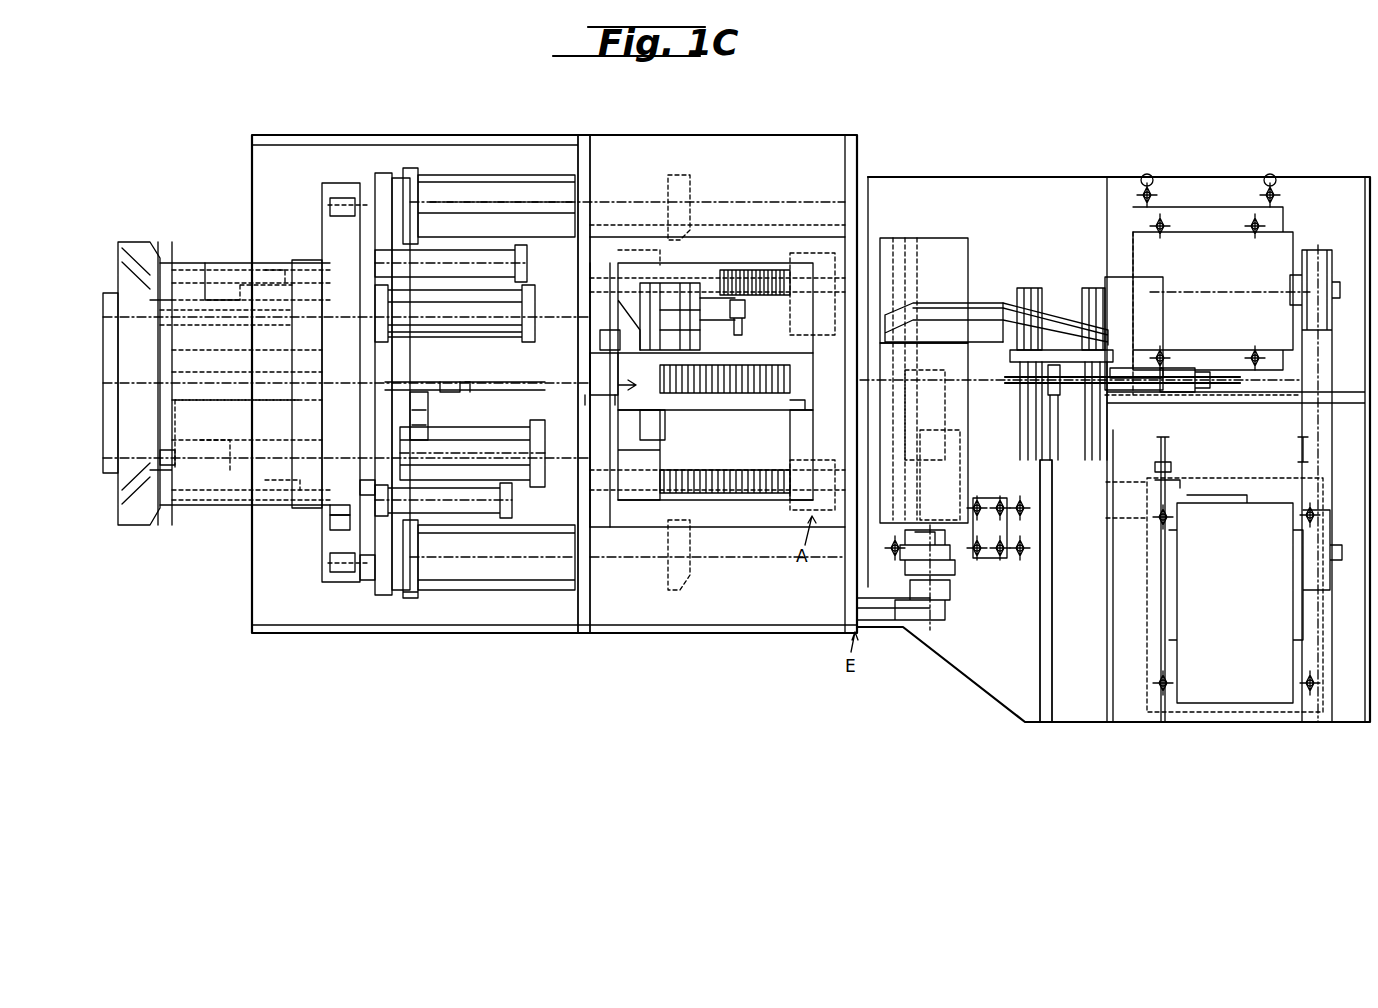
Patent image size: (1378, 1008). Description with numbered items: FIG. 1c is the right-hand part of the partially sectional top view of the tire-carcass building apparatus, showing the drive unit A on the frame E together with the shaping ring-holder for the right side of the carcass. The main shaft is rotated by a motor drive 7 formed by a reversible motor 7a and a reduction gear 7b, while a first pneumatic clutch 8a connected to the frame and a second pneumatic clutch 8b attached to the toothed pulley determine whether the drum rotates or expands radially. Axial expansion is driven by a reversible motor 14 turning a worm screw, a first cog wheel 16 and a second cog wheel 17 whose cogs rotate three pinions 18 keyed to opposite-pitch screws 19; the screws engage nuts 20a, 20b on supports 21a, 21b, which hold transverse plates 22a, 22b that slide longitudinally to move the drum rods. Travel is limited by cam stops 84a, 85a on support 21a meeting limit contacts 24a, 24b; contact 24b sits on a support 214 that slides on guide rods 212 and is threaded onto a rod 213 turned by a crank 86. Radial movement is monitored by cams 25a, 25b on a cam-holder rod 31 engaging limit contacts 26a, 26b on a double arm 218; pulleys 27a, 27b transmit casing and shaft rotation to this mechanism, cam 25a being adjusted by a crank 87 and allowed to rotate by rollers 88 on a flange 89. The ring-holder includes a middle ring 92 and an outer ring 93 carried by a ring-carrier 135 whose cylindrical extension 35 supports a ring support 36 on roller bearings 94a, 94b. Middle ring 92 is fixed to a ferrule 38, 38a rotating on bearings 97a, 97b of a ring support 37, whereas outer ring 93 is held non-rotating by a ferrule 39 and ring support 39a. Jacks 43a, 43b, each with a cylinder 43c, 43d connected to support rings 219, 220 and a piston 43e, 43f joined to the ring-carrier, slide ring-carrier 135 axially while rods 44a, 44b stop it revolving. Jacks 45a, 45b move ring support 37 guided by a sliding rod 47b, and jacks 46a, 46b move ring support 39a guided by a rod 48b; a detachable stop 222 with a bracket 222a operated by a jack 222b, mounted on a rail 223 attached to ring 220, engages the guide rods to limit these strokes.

The drive shaft 7 is at (175, 405).
The reversible motor 7a is at (1207, 346).
The reduction gear 7b is at (1244, 595).
The first pneumatically controlled clutch 8a is at (997, 468).
The second pneumatically operated clutch 8b is at (1068, 462).
The reversible motor 14 is at (960, 550).
The first cog wheel 16 is at (950, 470).
The second cog wheel 17 is at (925, 434).
The keyed pinions 18 is at (895, 258).
The rack 19 is at (740, 272).
The nut 20a is at (672, 405).
The nut 20b is at (800, 410).
The support 21a is at (625, 253).
The support 21b is at (808, 253).
The transverse plate 22a is at (650, 440).
The transverse plate 22b is at (810, 420).
The limit contact 24a is at (615, 395).
The limit contact 24b is at (680, 330).
The cam 25a is at (1052, 395).
The cam 25b is at (1078, 400).
The limit contact 26a is at (1010, 386).
The limit contact 26b is at (1105, 335).
The pulley 27a is at (1030, 290).
The pulley 27b is at (1090, 290).
The cam-holder rod 31 is at (1120, 372).
The cylindrical extension 35 is at (196, 317).
The ring support 36 is at (120, 300).
The ring support 37 is at (298, 285).
The cylindrical ferrule 38 is at (247, 280).
The cylindrical ferrule 38a is at (212, 265).
The cylindrical ferrule 39 is at (192, 263).
The ring support 39a is at (348, 510).
The jack 43a is at (505, 180).
The jack 43b is at (480, 588).
The cylinder 43c is at (445, 175).
The cylinder 43d is at (428, 595).
The piston 43e is at (372, 178).
The piston 43f is at (374, 565).
The rod 44a is at (455, 210).
The rod 44b is at (538, 560).
The jack 45a is at (425, 320).
The jack 45b is at (370, 485).
The jack 46a is at (435, 263).
The jack 46b is at (345, 530).
The sliding guide rod 47b is at (470, 465).
The guide rod 48b is at (445, 435).
The cam stop 84a is at (615, 400).
The cam stop 85a is at (628, 335).
The crank means 86 is at (742, 335).
The crank 87 is at (1205, 370).
The rollers 88 is at (1045, 360).
The flange 89 is at (1035, 360).
The middle cylindrical ring 92 is at (128, 262).
The outer cylindrical ring 93 is at (152, 240).
The roller bearing 94a is at (170, 455).
The roller bearing 94b is at (215, 460).
The bearing 97a is at (272, 270).
The bearing 97b is at (285, 480).
The ring-carrier 135 is at (335, 183).
The guide rods 212 is at (790, 298).
The threaded rod 213 is at (700, 320).
The support 214 is at (668, 290).
The double arm 218 is at (950, 300).
The support ring 219 is at (385, 173).
The support ring 220 is at (583, 135).
The detachable stop 222 is at (473, 372).
The bracket 222a is at (392, 385).
The jack 222b is at (428, 415).
The rail 223 is at (448, 383).